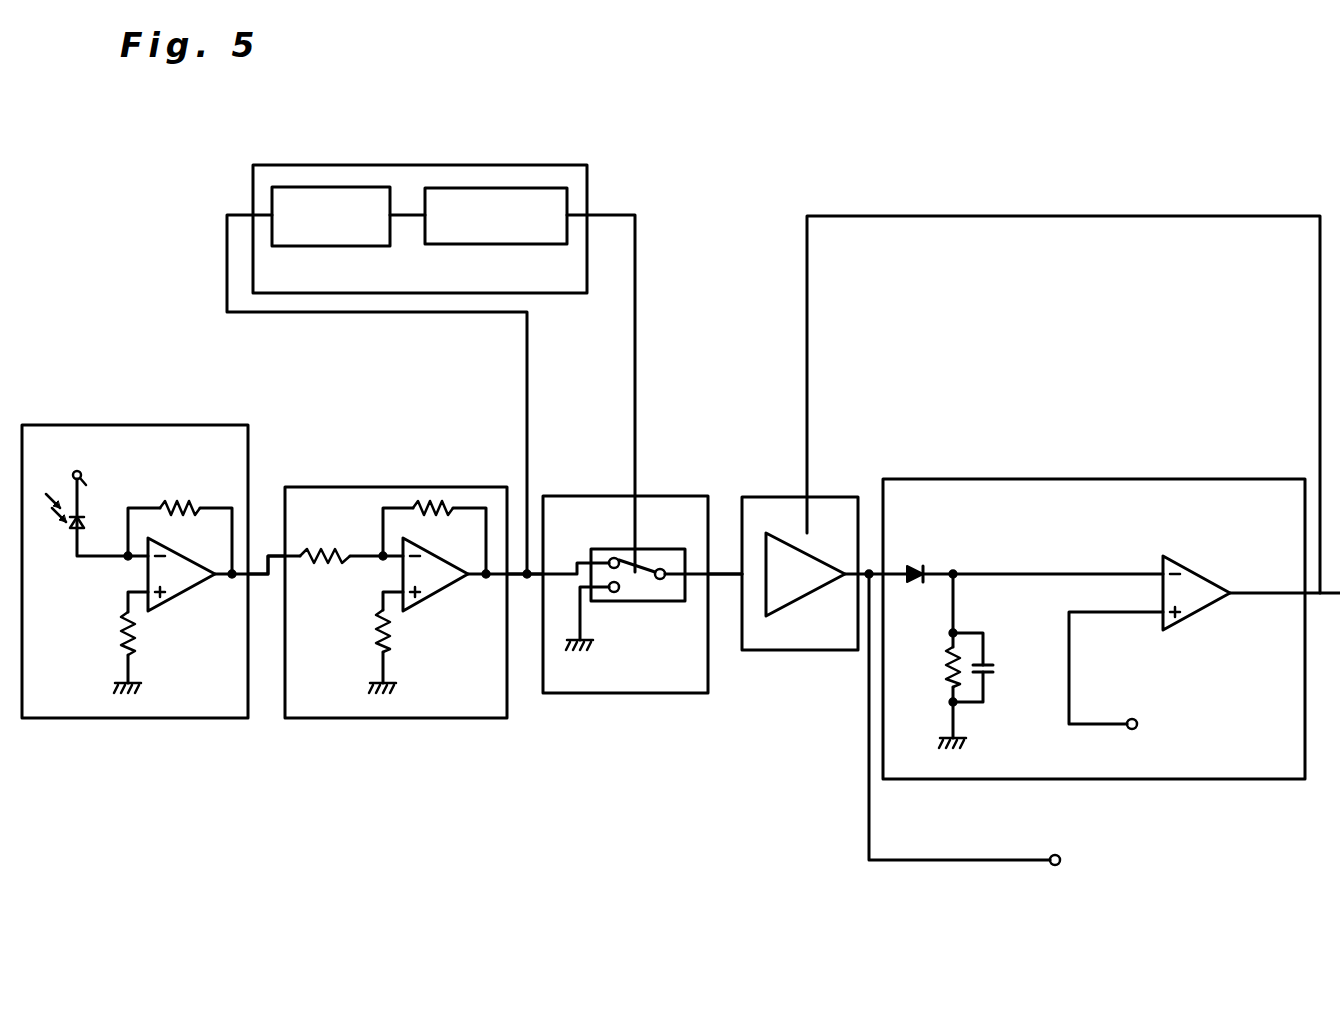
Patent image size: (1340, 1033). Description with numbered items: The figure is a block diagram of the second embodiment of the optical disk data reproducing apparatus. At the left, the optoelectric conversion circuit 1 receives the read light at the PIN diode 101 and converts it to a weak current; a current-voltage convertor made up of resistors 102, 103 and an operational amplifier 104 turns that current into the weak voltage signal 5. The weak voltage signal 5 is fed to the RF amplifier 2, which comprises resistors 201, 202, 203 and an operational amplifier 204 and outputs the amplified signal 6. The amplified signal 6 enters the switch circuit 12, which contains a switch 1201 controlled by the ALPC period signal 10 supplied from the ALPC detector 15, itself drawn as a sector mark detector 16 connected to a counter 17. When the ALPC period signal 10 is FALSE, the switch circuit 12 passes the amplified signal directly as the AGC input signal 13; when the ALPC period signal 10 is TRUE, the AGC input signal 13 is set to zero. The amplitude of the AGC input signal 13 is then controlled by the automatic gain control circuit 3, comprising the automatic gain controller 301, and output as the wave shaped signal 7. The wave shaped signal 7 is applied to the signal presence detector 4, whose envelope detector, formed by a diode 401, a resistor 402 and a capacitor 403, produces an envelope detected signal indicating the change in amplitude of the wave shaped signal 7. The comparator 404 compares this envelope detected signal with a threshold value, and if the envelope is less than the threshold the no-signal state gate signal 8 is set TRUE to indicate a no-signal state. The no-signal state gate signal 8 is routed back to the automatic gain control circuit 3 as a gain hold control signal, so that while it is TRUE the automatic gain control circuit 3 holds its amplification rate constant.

The optoelectric conversion circuit 1 is at (161, 533).
The PIN diode 101 is at (75, 530).
The resistor 102 is at (122, 628).
The resistor 103 is at (183, 500).
The operational amplifier 104 is at (178, 596).
The RF amplifier 2 is at (414, 533).
The resistor 201 is at (325, 549).
The resistor 202 is at (378, 637).
The resistor 203 is at (433, 500).
The operational amplifier 204 is at (437, 598).
The weak voltage signal 5 is at (268, 584).
The amplified signal 6 is at (528, 582).
The switch circuit 12 is at (642, 521).
The switch 1201 is at (645, 601).
The AGC input signal 13 is at (725, 580).
The automatic gain control circuit 3 is at (820, 515).
The automatic gain controller 301 is at (800, 600).
The signal presence detector 4 is at (1111, 564).
The diode 401 is at (917, 566).
The resistor 402 is at (948, 668).
The capacitor 403 is at (985, 666).
The comparator 404 is at (1185, 570).
The wave shaped signal 7 is at (1057, 729).
The no-signal state gate signal 8 is at (910, 216).
The ALPC period signal 10 is at (613, 214).
The ALPC detector 15 is at (290, 165).
The sector mark detector 16 is at (318, 247).
The counter 17 is at (468, 245).